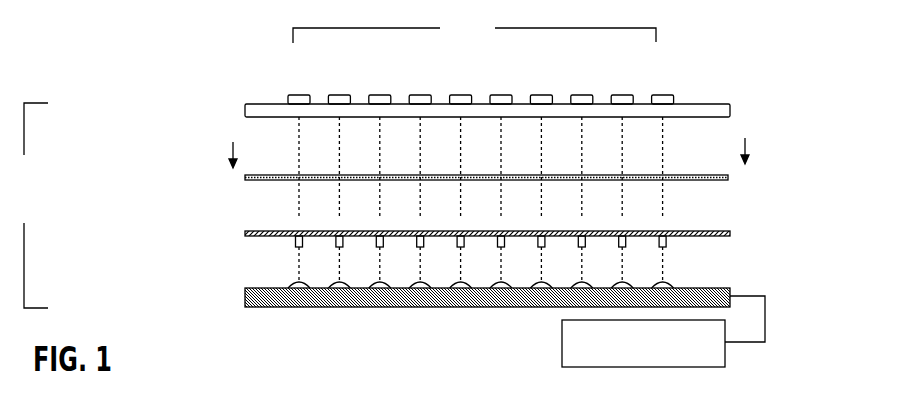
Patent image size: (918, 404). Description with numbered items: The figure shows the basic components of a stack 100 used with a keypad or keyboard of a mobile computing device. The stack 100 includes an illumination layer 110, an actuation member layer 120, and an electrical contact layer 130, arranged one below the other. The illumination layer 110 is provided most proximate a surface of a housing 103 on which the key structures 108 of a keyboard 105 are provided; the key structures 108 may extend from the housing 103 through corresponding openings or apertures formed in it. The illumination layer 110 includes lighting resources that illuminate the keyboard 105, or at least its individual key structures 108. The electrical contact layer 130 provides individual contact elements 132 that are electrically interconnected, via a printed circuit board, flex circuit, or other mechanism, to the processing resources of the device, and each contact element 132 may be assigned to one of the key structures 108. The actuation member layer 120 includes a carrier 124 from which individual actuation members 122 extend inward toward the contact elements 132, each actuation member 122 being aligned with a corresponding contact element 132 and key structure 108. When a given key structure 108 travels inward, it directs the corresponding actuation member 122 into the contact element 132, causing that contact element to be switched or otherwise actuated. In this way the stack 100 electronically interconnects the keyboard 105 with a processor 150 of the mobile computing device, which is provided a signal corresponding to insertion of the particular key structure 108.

The stack 100 is at (33, 205).
The housing 103 is at (258, 110).
The keyboard 105 is at (474, 30).
The key structures 108 is at (342, 93).
The illumination layer 110 is at (240, 183).
The actuation member layer 120 is at (240, 238).
The actuation members 122 is at (295, 247).
The carrier 124 is at (345, 230).
The electrical contact layer 130 is at (240, 301).
The contact elements 132 is at (302, 284).
The processor 150 is at (663, 331).